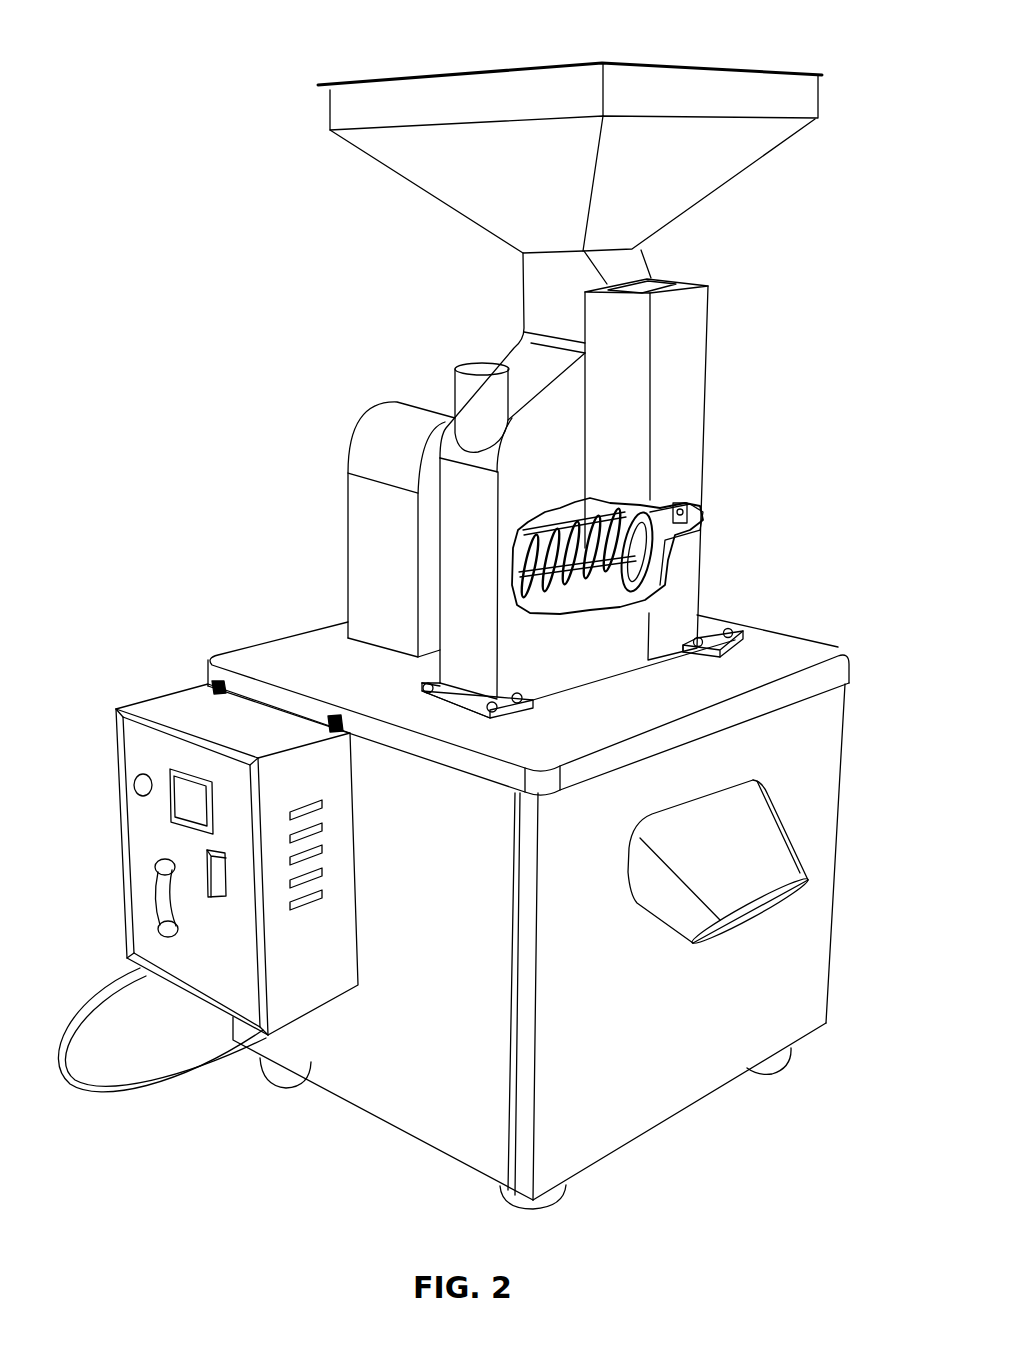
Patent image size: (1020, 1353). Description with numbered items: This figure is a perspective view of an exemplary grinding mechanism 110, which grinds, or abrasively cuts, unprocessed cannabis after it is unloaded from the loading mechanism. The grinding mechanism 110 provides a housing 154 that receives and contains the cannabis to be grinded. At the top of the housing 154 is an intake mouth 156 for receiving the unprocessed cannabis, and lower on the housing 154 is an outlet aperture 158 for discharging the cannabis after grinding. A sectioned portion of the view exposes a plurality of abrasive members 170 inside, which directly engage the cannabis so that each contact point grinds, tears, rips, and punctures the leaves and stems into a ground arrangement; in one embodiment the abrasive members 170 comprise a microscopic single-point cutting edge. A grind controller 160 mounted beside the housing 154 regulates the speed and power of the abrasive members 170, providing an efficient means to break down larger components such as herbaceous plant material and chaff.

The grinding mechanism 110 is at (136, 28).
The housing 154 is at (616, 1140).
The intake mouth 156 is at (807, 95).
The outlet aperture 158 is at (762, 852).
The grind controller 160 is at (128, 748).
The abrasive members 170 is at (690, 515).